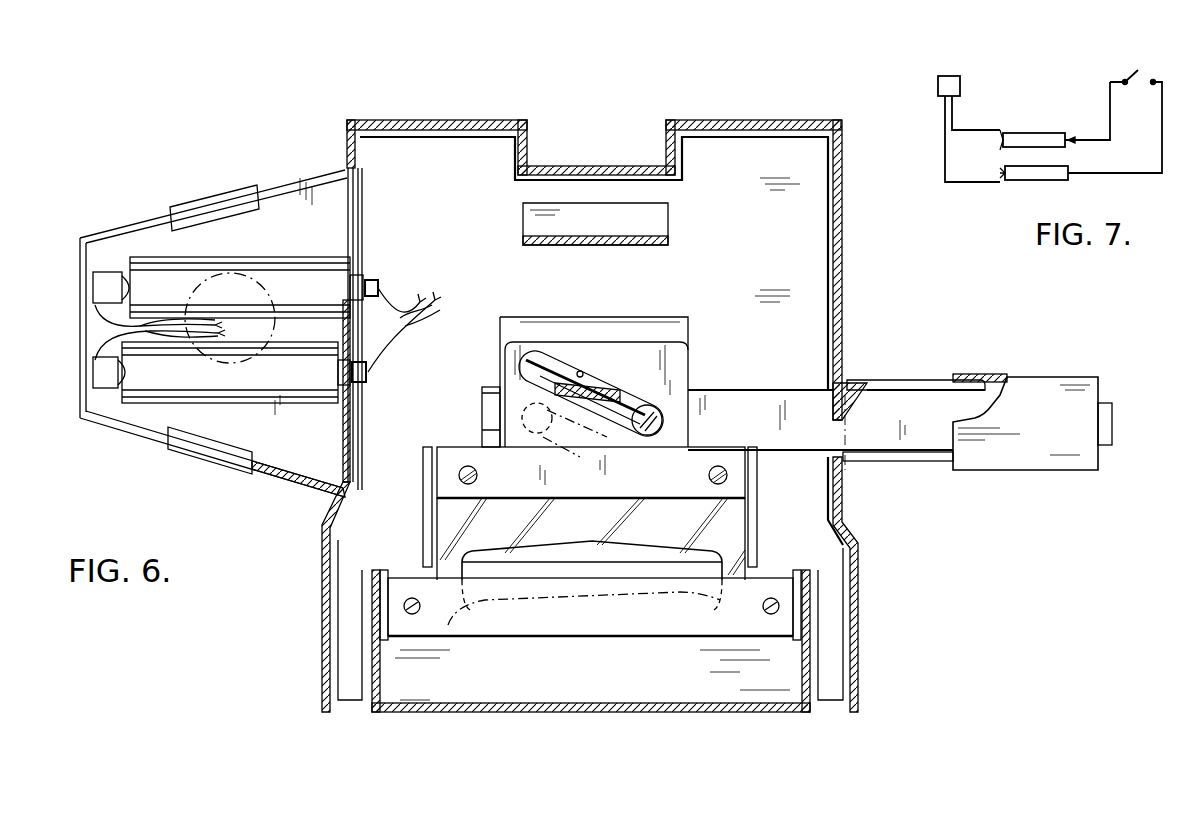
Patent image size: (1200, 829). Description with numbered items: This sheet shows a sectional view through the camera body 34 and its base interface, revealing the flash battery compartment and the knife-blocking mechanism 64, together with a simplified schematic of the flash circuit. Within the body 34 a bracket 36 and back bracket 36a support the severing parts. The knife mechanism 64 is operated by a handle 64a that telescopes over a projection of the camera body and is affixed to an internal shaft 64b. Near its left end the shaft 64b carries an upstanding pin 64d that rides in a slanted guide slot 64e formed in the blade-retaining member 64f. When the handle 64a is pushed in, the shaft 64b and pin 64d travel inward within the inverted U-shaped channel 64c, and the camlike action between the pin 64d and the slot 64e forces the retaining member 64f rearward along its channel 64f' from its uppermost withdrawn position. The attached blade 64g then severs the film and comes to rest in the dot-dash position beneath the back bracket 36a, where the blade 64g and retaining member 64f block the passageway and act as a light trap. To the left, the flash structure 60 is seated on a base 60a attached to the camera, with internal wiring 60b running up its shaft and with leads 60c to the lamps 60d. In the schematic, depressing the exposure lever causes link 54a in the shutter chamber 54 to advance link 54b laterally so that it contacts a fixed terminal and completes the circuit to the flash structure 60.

In FIG. 6, the camera body 34 is at (847, 252).
In FIG. 6, the bracket 36 is at (810, 305).
In FIG. 6, the back bracket 36a is at (672, 624).
In FIG. 6, the flash structure 60 is at (134, 216).
In FIG. 7, the flash structure 60 is at (962, 76).
In FIG. 6, the base 60a is at (287, 182).
In FIG. 6, the internal wiring 60b is at (160, 333).
In FIG. 7, the internal wiring 60b is at (975, 148).
In FIG. 6, the lead wires to switch 60c is at (406, 326).
In FIG. 7, the lead wires to switch 60c is at (1162, 144).
In FIG. 6, the lamps 60d is at (268, 270).
In FIG. 7, the lamps 60d is at (1037, 135).
In FIG. 6, the knife mechanism 64 is at (1048, 374).
In FIG. 6, the handle 64a is at (862, 376).
In FIG. 6, the shaft 64b is at (922, 400).
In FIG. 6, the inverted U-shaped channel 64c is at (490, 394).
In FIG. 6, the pin 64d is at (532, 428).
In FIG. 6, the slanted guide slot 64e is at (583, 374).
In FIG. 6, the blade-retaining member 64f is at (616, 382).
In FIG. 6, the channel 64f' is at (594, 311).
In FIG. 6, the blade 64g is at (730, 528).
In FIG. 7, the shutter chamber 54 is at (1139, 70).
In FIG. 7, the link 54a is at (1152, 82).
In FIG. 7, the link 54b is at (1124, 80).